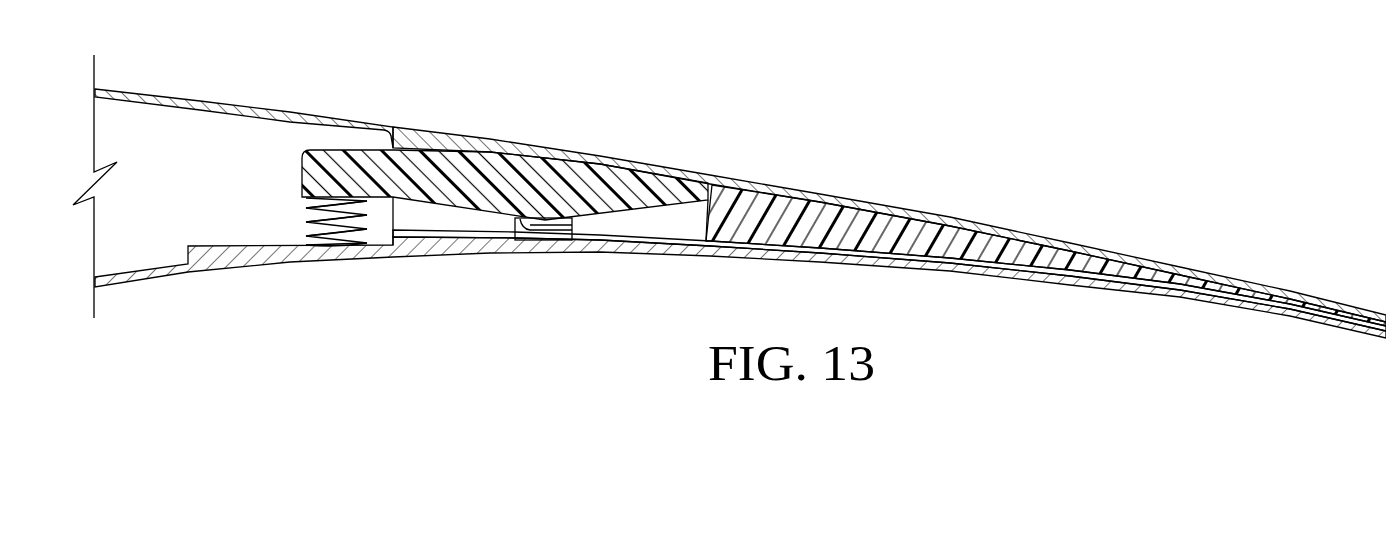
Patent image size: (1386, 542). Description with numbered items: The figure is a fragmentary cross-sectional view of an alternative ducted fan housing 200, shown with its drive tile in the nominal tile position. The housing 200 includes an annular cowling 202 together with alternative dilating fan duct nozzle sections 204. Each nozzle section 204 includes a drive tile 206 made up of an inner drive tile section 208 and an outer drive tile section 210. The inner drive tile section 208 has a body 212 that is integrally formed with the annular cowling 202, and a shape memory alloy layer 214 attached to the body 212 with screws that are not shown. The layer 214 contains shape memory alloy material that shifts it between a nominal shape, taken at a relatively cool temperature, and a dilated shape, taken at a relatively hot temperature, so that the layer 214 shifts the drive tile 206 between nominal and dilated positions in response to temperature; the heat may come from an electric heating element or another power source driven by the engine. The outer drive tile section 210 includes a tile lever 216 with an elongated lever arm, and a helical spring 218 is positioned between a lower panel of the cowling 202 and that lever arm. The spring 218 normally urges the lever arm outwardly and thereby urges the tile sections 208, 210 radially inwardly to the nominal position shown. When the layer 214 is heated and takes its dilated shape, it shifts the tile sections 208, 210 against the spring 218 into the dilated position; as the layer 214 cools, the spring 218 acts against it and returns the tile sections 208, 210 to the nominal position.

The ducted fan housing 200 is at (1032, 98).
The annular cowling 202 is at (262, 106).
The dilating fan duct nozzle section 204 is at (567, 150).
The drive tile 206 is at (887, 207).
The inner drive tile section 208 is at (890, 265).
The outer drive tile section 210 is at (1020, 228).
The body 212 is at (1021, 278).
The shape memory alloy layer 214 is at (1147, 260).
The tile lever 216 is at (502, 208).
The helical spring 218 is at (333, 222).